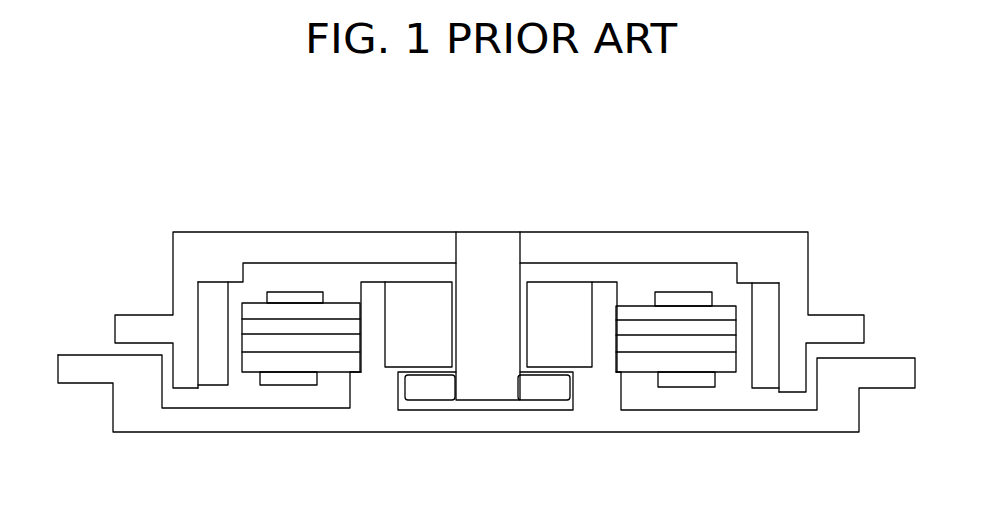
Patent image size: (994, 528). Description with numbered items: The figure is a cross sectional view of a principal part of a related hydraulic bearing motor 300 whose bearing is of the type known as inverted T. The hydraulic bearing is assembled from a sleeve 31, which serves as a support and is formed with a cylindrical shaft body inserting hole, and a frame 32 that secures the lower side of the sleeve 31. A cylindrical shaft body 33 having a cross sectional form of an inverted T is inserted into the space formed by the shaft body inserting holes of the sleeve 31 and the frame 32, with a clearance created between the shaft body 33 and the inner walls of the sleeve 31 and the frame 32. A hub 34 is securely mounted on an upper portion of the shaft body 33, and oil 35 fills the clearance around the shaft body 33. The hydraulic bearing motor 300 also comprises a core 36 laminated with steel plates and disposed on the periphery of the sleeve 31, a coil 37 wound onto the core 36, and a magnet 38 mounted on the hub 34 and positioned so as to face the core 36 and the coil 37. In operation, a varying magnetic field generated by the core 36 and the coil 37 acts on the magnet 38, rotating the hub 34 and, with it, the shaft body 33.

The hydraulic bearing motor 300 is at (707, 155).
The sleeve 31 is at (542, 303).
The frame 32 is at (567, 433).
The shaft body 33 is at (485, 235).
The hub 34 is at (361, 235).
The oil 35 is at (418, 372).
The core 36 is at (630, 310).
The coil 37 is at (686, 298).
The magnet 38 is at (765, 295).